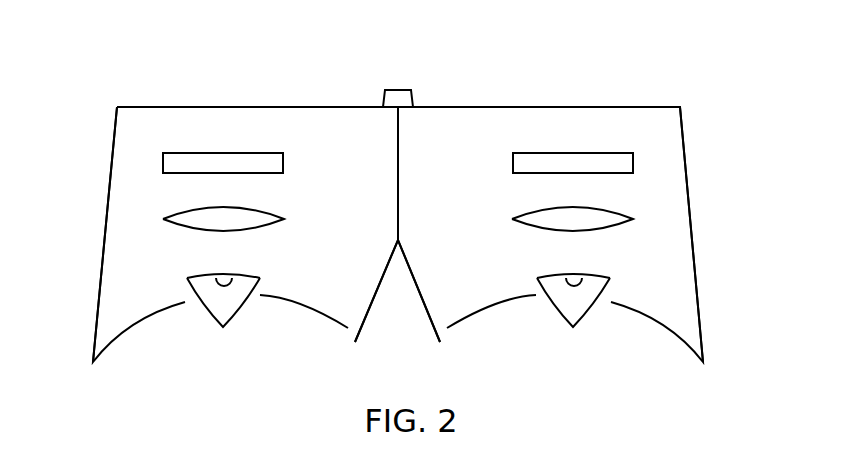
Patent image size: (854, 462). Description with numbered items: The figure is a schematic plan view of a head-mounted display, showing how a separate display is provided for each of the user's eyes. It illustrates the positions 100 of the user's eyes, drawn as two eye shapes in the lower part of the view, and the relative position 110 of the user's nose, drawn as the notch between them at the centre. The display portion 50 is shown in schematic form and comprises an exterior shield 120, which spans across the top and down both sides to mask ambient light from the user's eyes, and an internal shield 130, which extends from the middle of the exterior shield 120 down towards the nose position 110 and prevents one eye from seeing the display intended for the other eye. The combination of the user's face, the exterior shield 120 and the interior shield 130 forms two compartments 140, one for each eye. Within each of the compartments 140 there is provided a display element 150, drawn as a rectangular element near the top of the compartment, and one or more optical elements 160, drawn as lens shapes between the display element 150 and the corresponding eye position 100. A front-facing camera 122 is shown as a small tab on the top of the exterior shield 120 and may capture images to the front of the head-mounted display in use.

The display portion 50 is at (665, 107).
The positions of the user's eyes 100 is at (230, 308).
The relative position of the user's nose 110 is at (420, 288).
The exterior shield 120 is at (473, 105).
The front-facing camera 122 is at (393, 88).
The internal shield 130 is at (400, 175).
The compartments 140 is at (270, 127).
The display element 150 is at (182, 162).
The optical elements 160 is at (160, 220).